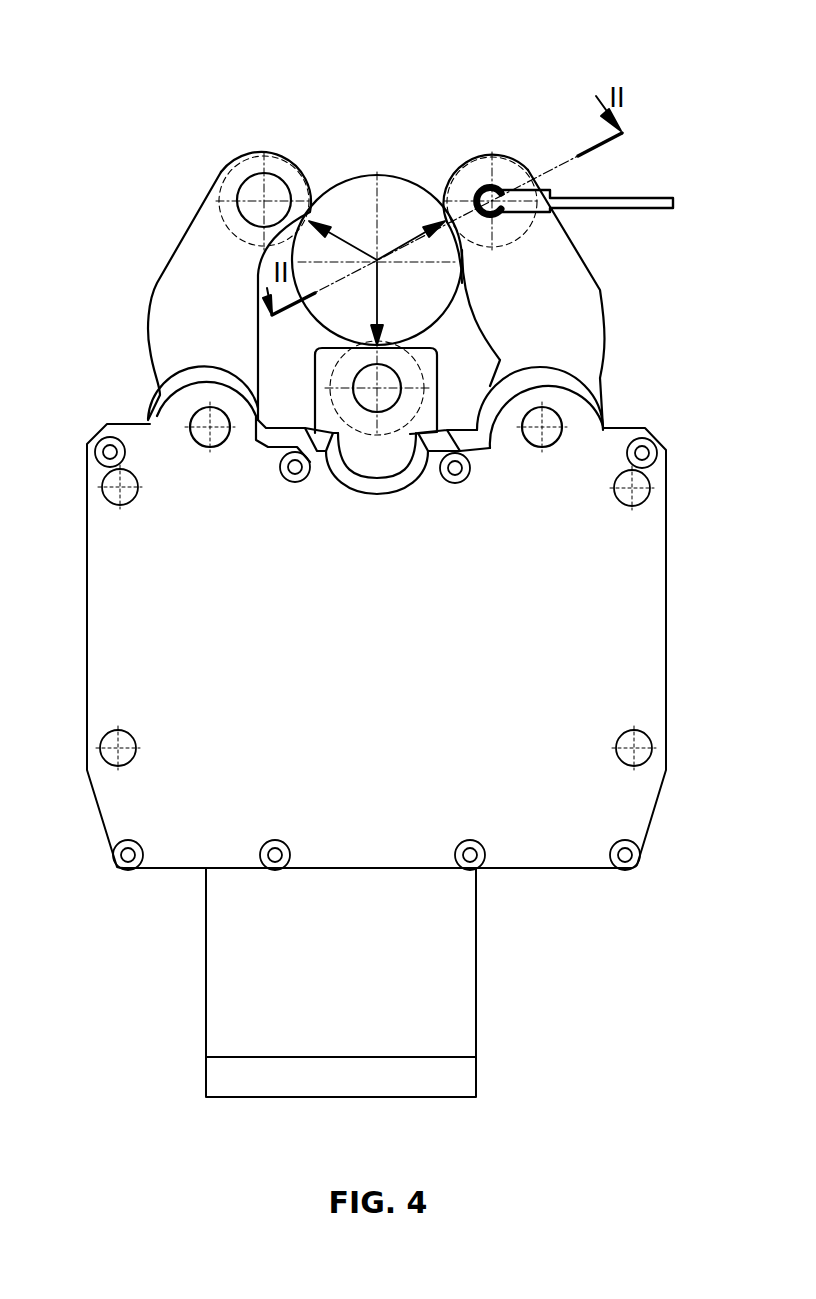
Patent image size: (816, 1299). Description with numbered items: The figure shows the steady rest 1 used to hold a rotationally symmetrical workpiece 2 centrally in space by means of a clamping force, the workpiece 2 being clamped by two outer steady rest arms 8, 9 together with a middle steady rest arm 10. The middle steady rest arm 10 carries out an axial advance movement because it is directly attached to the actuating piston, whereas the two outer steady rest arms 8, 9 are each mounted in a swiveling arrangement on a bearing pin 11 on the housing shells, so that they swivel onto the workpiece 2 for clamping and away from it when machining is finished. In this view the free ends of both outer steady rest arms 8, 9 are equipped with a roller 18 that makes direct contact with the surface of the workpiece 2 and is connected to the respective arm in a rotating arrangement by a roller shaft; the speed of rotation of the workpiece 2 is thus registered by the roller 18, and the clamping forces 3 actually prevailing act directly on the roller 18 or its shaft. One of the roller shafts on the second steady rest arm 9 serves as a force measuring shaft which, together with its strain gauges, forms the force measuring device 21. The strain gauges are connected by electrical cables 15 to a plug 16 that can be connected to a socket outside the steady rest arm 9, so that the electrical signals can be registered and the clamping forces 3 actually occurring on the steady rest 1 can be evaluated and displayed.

The steady rest 1 is at (640, 75).
The workpiece 2 is at (353, 220).
The clamping forces 3 is at (410, 232).
The outer steady rest arm 8 is at (210, 245).
The outer steady rest arm 9 is at (568, 296).
The middle steady rest arm 10 is at (312, 372).
The bearing pin 11 is at (193, 426).
The electrical cables 15 is at (612, 197).
The plug 16 is at (560, 238).
The roller 18 is at (438, 208).
The force measuring device 21 is at (497, 185).